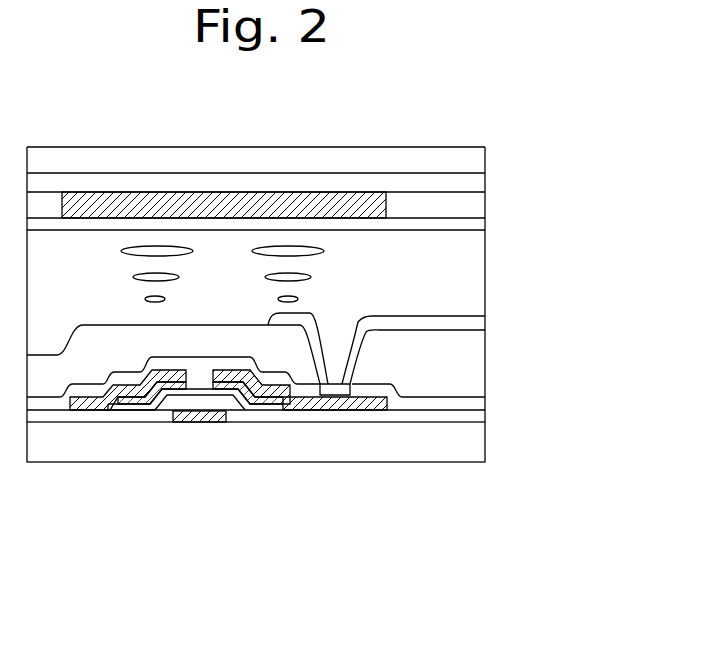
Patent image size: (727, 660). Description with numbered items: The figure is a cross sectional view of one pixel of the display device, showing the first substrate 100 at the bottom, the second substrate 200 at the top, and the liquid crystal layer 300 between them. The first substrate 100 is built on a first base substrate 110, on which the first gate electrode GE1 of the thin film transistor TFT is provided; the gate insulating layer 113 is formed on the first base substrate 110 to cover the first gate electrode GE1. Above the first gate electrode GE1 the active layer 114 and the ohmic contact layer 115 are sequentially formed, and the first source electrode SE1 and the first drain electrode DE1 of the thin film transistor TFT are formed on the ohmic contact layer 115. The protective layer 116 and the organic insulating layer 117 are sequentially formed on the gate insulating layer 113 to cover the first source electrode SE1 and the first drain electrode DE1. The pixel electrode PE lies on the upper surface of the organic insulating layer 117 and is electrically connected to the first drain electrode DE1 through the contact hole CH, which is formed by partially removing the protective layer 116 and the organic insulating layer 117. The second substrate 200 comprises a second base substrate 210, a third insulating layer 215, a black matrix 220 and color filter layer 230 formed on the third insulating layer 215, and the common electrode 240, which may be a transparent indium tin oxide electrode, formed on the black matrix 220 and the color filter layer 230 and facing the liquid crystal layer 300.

The second substrate 200 is at (327, 170).
The second base substrate 210 is at (485, 157).
The third insulating layer 215 is at (485, 181).
The black matrix 220 is at (338, 207).
The color filter layer 230 is at (295, 159).
The common electrode 240 is at (485, 226).
The liquid crystal layer 300 is at (485, 274).
The first substrate 100 is at (327, 406).
The first base substrate 110 is at (485, 440).
The gate insulating layer 113 is at (485, 413).
The active layer 114 is at (142, 412).
The ohmic contact layer 115 is at (250, 405).
The protective layer 116 is at (485, 397).
The organic insulating layer 117 is at (295, 333).
The first gate electrode GE1 is at (192, 423).
The first source electrode SE1 is at (95, 412).
The first drain electrode DE1 is at (300, 443).
The pixel electrode PE is at (337, 390).
The contact hole CH is at (342, 333).
The thin film transistor TFT is at (228, 463).